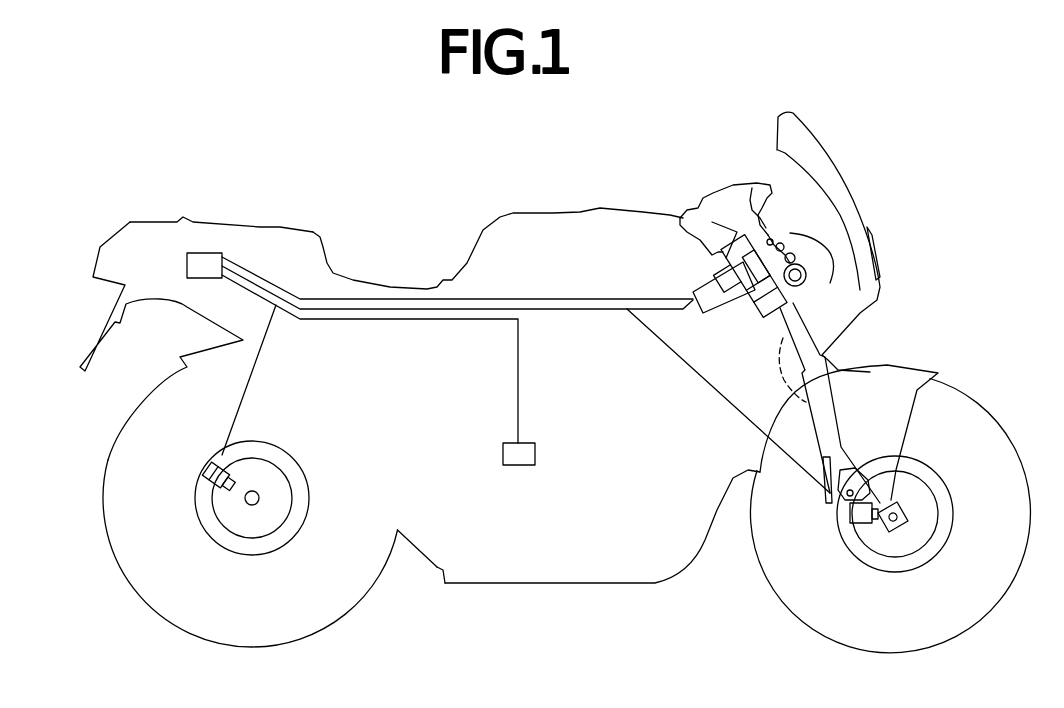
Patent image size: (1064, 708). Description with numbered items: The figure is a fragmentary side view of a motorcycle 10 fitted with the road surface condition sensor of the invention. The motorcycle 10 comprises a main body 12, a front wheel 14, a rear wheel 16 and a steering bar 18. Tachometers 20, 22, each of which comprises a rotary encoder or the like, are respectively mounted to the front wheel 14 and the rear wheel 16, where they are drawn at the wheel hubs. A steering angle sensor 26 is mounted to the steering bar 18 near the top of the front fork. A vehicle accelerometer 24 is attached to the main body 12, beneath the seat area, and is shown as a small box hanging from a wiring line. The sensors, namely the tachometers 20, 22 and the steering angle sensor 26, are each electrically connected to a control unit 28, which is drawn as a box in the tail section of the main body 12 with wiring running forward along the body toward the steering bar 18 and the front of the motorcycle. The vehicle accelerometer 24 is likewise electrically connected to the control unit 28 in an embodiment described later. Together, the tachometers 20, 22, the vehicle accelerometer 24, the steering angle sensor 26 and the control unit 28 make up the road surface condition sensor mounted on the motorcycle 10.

The motorcycle 10 is at (372, 196).
The main body 12 is at (519, 213).
The front wheel 14 is at (989, 414).
The rear wheel 16 is at (113, 446).
The steering bar 18 is at (780, 229).
The tachometer 20 is at (857, 522).
The tachometer 22 is at (208, 456).
The vehicle accelerometer 24 is at (520, 458).
The steering angle sensor 26 is at (753, 267).
The control unit 28 is at (200, 263).